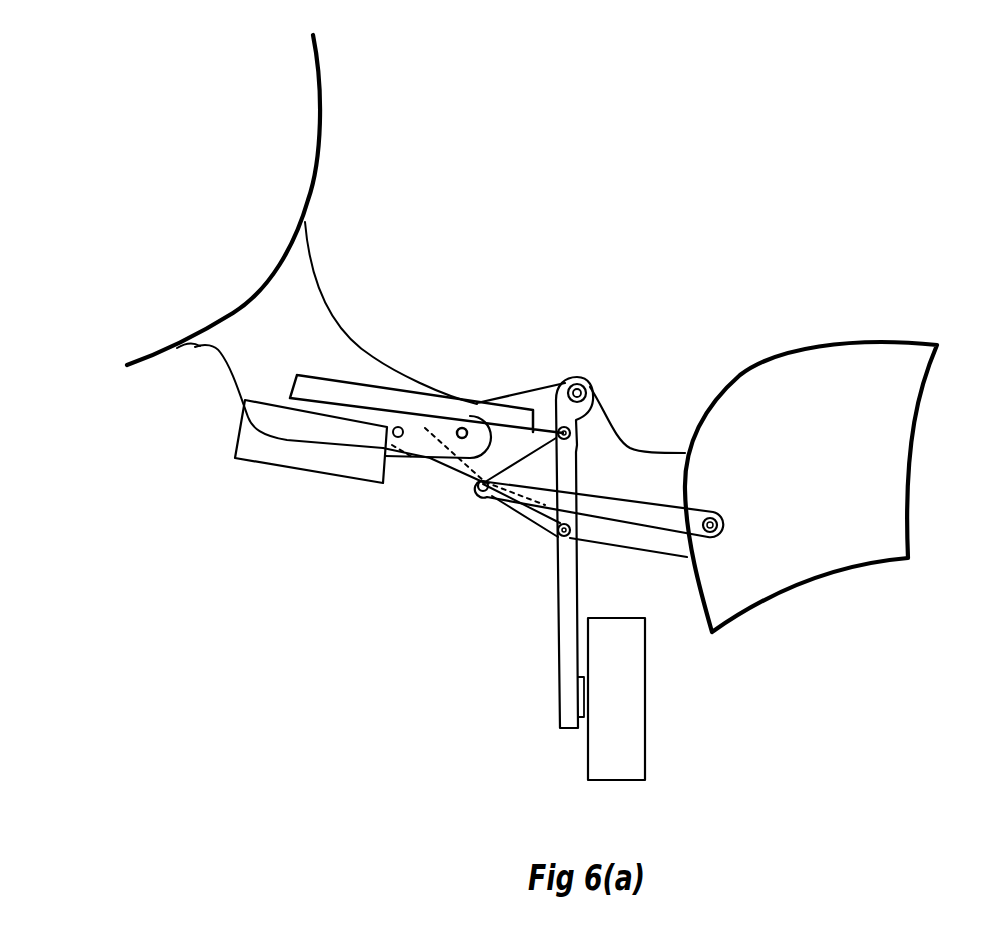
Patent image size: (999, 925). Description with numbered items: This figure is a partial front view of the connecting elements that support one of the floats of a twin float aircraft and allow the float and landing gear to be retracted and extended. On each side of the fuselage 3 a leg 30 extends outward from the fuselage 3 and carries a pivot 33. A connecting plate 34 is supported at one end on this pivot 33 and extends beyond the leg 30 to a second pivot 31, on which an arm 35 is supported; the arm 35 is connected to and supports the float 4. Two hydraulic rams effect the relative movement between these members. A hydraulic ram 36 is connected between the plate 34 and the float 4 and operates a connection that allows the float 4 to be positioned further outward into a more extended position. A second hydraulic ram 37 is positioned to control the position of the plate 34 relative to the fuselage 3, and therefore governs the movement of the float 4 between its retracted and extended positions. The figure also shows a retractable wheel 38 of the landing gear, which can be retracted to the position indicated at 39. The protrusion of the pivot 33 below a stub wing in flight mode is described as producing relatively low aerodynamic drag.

The fuselage 3 is at (307, 110).
The leg 30 is at (305, 277).
The pivot 31 is at (590, 387).
The pivot 33 is at (468, 430).
The connecting plate 34 is at (544, 393).
The arm 35 is at (643, 470).
The hydraulic ram 36 is at (540, 523).
The hydraulic ram 37 is at (420, 443).
The retractable wheel 38 is at (630, 698).
The retracted position of wheel 39 is at (307, 457).
The float 4 is at (887, 482).